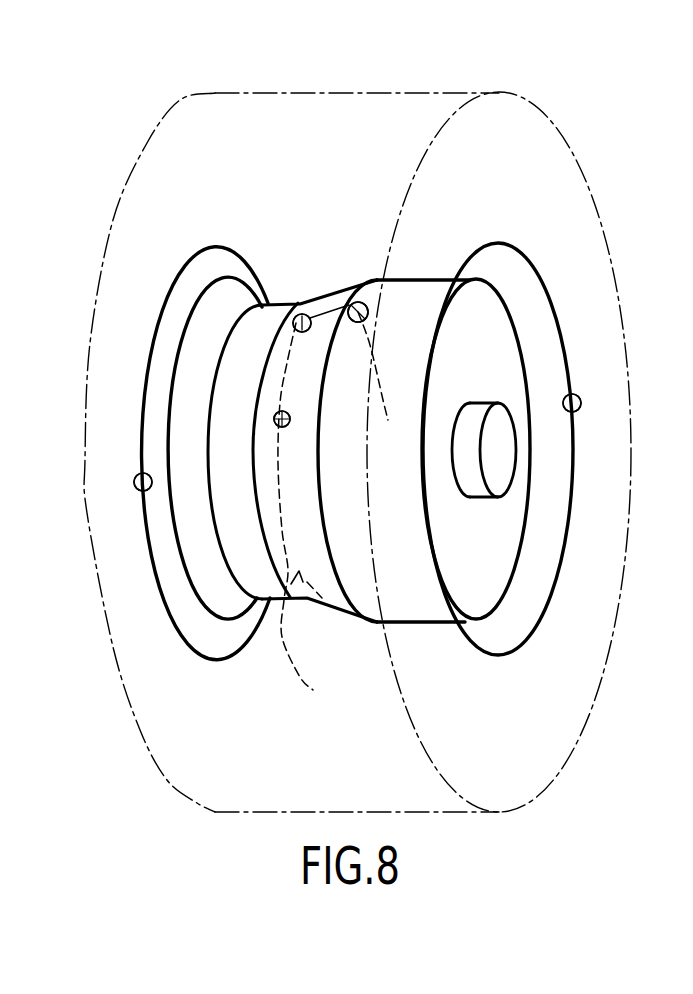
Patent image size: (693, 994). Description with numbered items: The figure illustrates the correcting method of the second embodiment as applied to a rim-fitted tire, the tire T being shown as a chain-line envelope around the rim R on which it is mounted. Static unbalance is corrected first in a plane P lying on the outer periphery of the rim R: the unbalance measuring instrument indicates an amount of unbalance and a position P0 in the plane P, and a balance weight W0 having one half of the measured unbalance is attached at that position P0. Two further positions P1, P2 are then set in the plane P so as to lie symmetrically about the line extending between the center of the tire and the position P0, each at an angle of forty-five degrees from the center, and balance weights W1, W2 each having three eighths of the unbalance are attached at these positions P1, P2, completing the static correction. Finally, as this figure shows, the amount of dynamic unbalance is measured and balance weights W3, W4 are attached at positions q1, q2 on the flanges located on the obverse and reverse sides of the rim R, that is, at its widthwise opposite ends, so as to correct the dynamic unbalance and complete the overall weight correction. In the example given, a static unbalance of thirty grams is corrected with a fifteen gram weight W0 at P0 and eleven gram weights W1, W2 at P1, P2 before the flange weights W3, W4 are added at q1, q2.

The tire T is at (373, 107).
The rim R is at (417, 621).
The plane P is at (333, 507).
The position p0 P0 is at (299, 315).
The position p1 P1 is at (360, 302).
The position p2 P2 is at (274, 420).
The balance weight w0 W0 is at (310, 344).
The balance weight w1 W1 is at (378, 317).
The balance weight w2 W2 is at (292, 439).
The balance weight w3 W3 is at (596, 416).
The balance weight w4 W4 is at (127, 483).
The position q1 is at (580, 397).
The position q2 is at (141, 474).